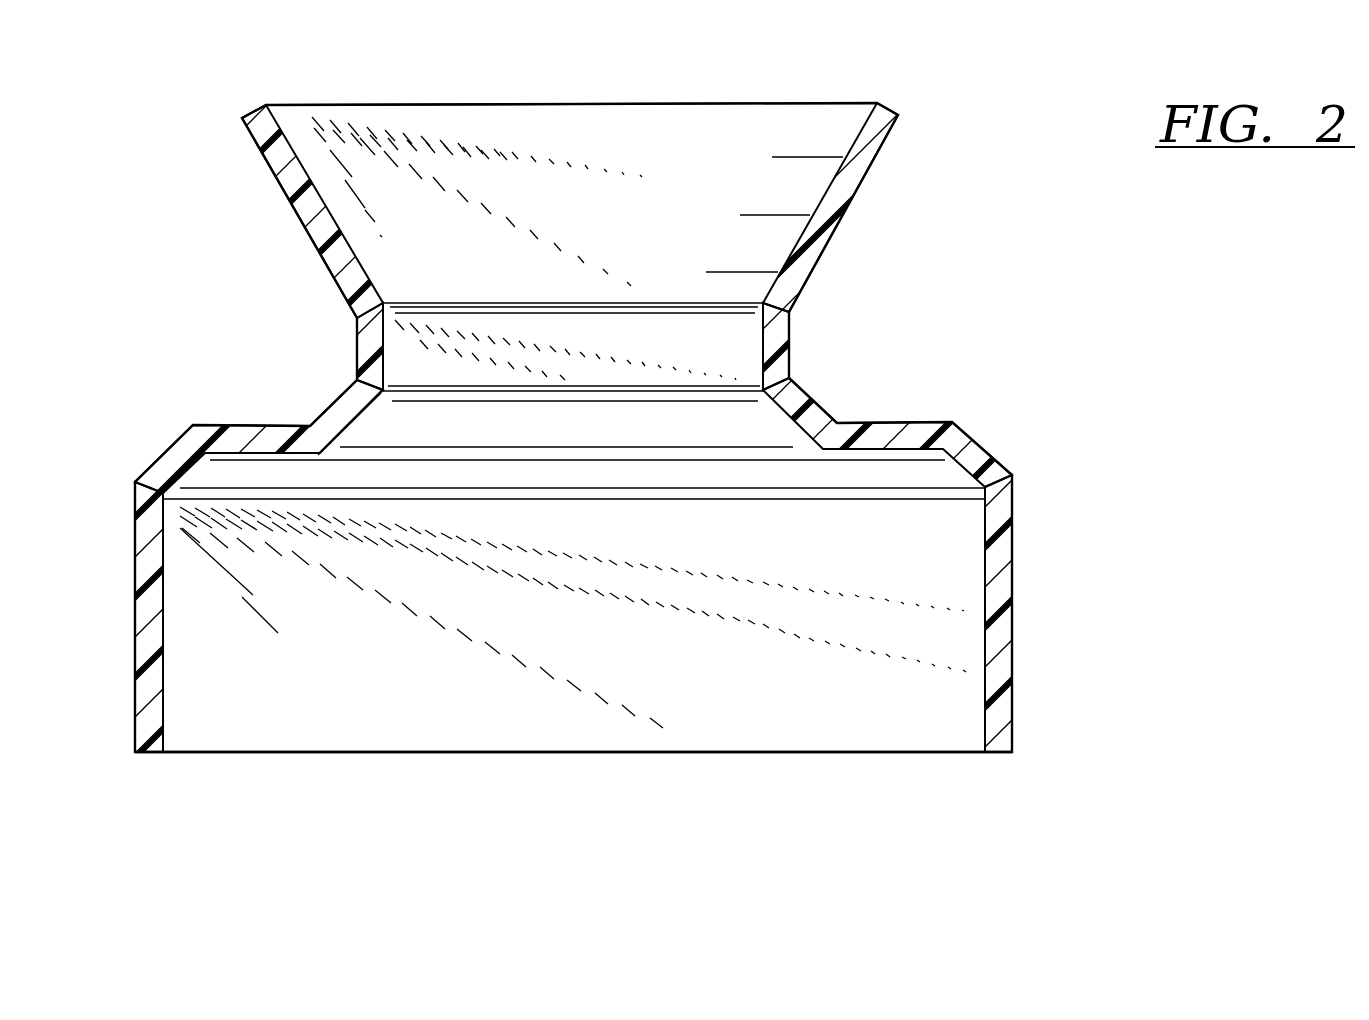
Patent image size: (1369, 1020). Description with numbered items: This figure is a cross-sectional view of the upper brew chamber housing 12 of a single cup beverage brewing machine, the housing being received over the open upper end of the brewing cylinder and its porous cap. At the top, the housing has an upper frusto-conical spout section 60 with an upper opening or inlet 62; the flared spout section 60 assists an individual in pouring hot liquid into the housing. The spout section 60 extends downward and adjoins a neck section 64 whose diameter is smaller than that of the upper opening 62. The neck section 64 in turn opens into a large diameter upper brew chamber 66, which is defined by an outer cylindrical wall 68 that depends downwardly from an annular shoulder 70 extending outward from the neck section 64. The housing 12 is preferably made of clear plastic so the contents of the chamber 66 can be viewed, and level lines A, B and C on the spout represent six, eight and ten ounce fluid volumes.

The upper brew chamber housing 12 is at (865, 305).
The upper frusto-conical spout section 60 is at (868, 140).
The upper opening 62 is at (487, 180).
The neck section 64 is at (772, 345).
The upper brew chamber 66 is at (750, 637).
The outer cylindrical wall 68 is at (992, 585).
The annular shoulder 70 is at (917, 430).